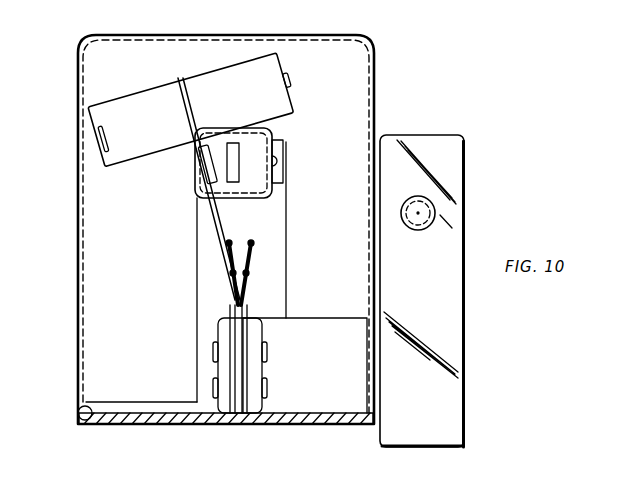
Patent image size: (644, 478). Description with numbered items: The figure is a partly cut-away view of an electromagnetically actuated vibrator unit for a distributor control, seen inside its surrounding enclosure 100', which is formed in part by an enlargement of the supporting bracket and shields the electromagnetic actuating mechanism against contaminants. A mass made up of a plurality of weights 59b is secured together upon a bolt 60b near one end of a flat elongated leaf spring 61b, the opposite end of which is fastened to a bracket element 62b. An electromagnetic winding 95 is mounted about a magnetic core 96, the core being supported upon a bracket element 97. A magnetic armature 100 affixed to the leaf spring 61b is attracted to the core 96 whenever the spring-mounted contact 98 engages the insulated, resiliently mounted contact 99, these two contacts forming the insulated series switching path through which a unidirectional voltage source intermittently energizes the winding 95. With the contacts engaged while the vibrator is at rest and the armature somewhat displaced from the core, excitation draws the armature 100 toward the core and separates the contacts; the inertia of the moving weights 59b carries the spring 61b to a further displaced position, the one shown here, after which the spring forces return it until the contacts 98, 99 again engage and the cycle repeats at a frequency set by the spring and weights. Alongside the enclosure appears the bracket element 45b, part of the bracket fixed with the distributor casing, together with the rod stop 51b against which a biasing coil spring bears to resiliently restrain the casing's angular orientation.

The weights 59b is at (215, 78).
The bolt 60b is at (292, 82).
The leaf spring 61b is at (218, 214).
The bracket element 62b is at (345, 368).
The electromagnetic winding 95 is at (272, 192).
The magnetic core 96 is at (240, 152).
The bracket element 97 is at (286, 206).
The spring-mounted contact 98 is at (245, 243).
The insulated resiliently-mounted contact 99 is at (241, 248).
The magnetic armature 100 is at (176, 170).
The surrounding enclosure 100' is at (197, 242).
The bracket element 45b is at (445, 277).
The rod stop 51b is at (436, 213).